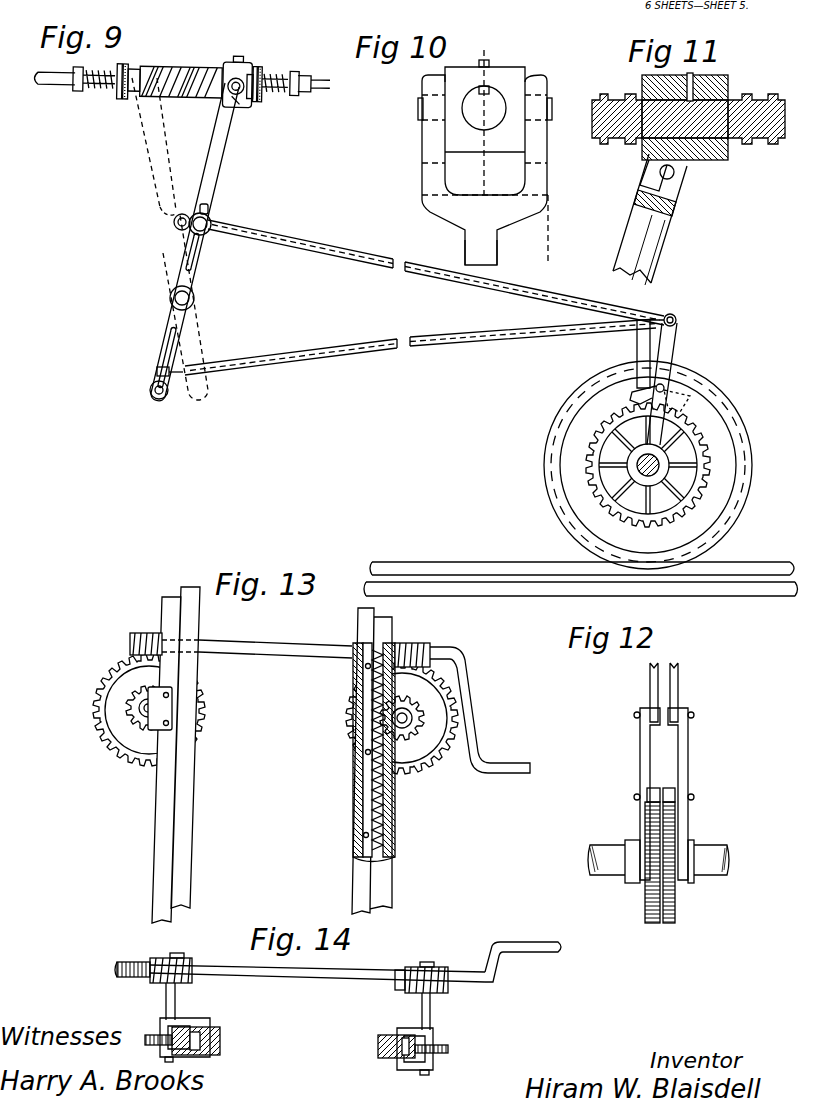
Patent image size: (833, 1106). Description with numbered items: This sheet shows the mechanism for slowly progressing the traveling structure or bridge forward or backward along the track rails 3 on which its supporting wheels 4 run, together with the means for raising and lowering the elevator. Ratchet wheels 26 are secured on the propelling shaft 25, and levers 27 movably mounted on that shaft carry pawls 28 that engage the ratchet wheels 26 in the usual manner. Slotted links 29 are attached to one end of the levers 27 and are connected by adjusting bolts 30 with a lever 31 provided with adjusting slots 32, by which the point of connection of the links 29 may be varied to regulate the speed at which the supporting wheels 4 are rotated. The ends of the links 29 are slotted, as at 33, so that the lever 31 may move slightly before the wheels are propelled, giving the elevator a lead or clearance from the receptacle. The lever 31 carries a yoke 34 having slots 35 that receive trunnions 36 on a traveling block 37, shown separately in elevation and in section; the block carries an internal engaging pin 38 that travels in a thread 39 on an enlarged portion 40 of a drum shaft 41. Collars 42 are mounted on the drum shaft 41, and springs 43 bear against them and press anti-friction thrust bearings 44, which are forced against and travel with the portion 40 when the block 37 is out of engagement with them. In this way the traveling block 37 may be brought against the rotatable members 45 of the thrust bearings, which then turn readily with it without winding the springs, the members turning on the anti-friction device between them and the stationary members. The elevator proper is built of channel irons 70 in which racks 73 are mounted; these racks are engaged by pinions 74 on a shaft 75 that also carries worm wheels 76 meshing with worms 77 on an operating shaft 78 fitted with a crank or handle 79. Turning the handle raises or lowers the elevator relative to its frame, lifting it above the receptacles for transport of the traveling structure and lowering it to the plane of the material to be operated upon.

In FIG. 9, the track rails 3 is at (732, 575).
In FIG. 9, the supporting wheels 4 is at (648, 465).
In FIG. 9, the propelling shaft 25 is at (636, 467).
In FIG. 12, the propelling shaft 25 is at (716, 877).
In FIG. 9, the ratchet wheels 26 is at (697, 418).
In FIG. 12, the ratchet wheels 26 is at (664, 926).
In FIG. 9, the levers 27 is at (637, 350).
In FIG. 12, the levers 27 is at (640, 821).
In FIG. 9, the pawls 28 is at (686, 400).
In FIG. 12, the pawls 28 is at (668, 794).
In FIG. 9, the slotted links 29 is at (357, 257).
In FIG. 12, the slotted links 29 is at (660, 694).
In FIG. 9, the adjusting bolts 30 is at (214, 223).
In FIG. 9, the lever 31 is at (148, 183).
In FIG. 10, the lever 31 is at (481, 250).
In FIG. 11, the lever 31 is at (662, 252).
In FIG. 9, the adjusting slots 32 is at (180, 332).
In FIG. 9, the slots 33 is at (176, 228).
In FIG. 9, the yoke 34 is at (233, 58).
In FIG. 10, the yoke 34 is at (525, 177).
In FIG. 11, the yoke 34 is at (690, 180).
In FIG. 9, the slots 35 is at (242, 96).
In FIG. 10, the slots 35 is at (425, 146).
In FIG. 11, the slots 35 is at (660, 162).
In FIG. 9, the trunnions 36 is at (258, 72).
In FIG. 10, the trunnions 36 is at (418, 110).
In FIG. 11, the trunnions 36 is at (632, 138).
In FIG. 9, the traveling block 37 is at (223, 64).
In FIG. 10, the traveling block 37 is at (465, 122).
In FIG. 11, the traveling block 37 is at (702, 87).
In FIG. 9, the internal engaging pin 38 is at (238, 52).
In FIG. 10, the internal engaging pin 38 is at (484, 95).
In FIG. 11, the internal engaging pin 38 is at (694, 78).
In FIG. 9, the thread 39 is at (165, 67).
In FIG. 11, the thread 39 is at (616, 100).
In FIG. 9, the enlarged portion 40 is at (180, 92).
In FIG. 9, the drum shaft 41 is at (320, 78).
In FIG. 9, the collars 42 is at (77, 90).
In FIG. 9, the springs 43 is at (98, 90).
In FIG. 9, the anti-friction thrust bearings 44 is at (119, 97).
In FIG. 9, the rotatable members 45 is at (126, 100).
In FIG. 13, the channel irons 70 is at (156, 858).
In FIG. 14, the channel irons 70 is at (194, 1030).
In FIG. 13, the racks 73 is at (382, 822).
In FIG. 14, the racks 73 is at (212, 1056).
In FIG. 13, the pinions 74 is at (104, 740).
In FIG. 14, the pinions 74 is at (154, 1036).
In FIG. 13, the shaft 75 is at (158, 706).
In FIG. 14, the shaft 75 is at (176, 1003).
In FIG. 13, the worm wheels 76 is at (136, 722).
In FIG. 14, the worm wheels 76 is at (260, 986).
In FIG. 13, the worms 77 is at (142, 634).
In FIG. 14, the worms 77 is at (194, 958).
In FIG. 13, the operating shaft 78 is at (286, 652).
In FIG. 14, the operating shaft 78 is at (300, 979).
In FIG. 13, the crank or handle 79 is at (480, 710).
In FIG. 14, the crank or handle 79 is at (532, 950).